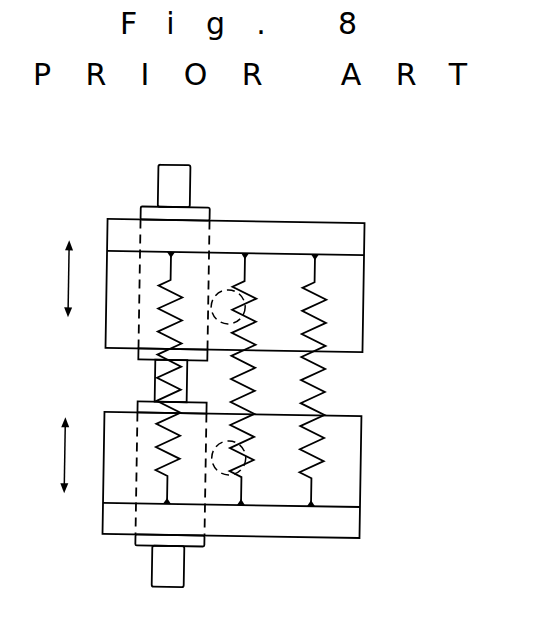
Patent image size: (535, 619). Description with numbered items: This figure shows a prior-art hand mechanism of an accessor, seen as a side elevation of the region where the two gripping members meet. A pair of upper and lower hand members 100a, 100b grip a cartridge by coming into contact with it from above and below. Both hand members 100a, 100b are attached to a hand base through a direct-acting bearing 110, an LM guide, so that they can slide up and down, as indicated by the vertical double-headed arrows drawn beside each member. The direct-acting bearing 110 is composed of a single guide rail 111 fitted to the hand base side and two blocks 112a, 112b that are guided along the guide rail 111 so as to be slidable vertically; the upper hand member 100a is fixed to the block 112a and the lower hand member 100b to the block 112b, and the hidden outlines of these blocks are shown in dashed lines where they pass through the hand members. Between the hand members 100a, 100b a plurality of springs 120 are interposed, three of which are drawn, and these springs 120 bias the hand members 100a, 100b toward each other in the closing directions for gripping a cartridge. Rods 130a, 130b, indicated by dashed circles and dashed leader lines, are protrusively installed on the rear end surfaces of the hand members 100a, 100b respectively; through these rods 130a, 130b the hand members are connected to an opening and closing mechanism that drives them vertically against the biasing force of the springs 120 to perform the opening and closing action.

The upper hand member 100a is at (343, 227).
The lower hand member 100b is at (349, 526).
The direct-acting bearing 110 is at (175, 367).
The guide rail 111 is at (165, 188).
The block 112a is at (199, 207).
The block 112b is at (138, 547).
The spring 120 is at (322, 367).
The rod 130a is at (246, 293).
The rod 130b is at (214, 457).